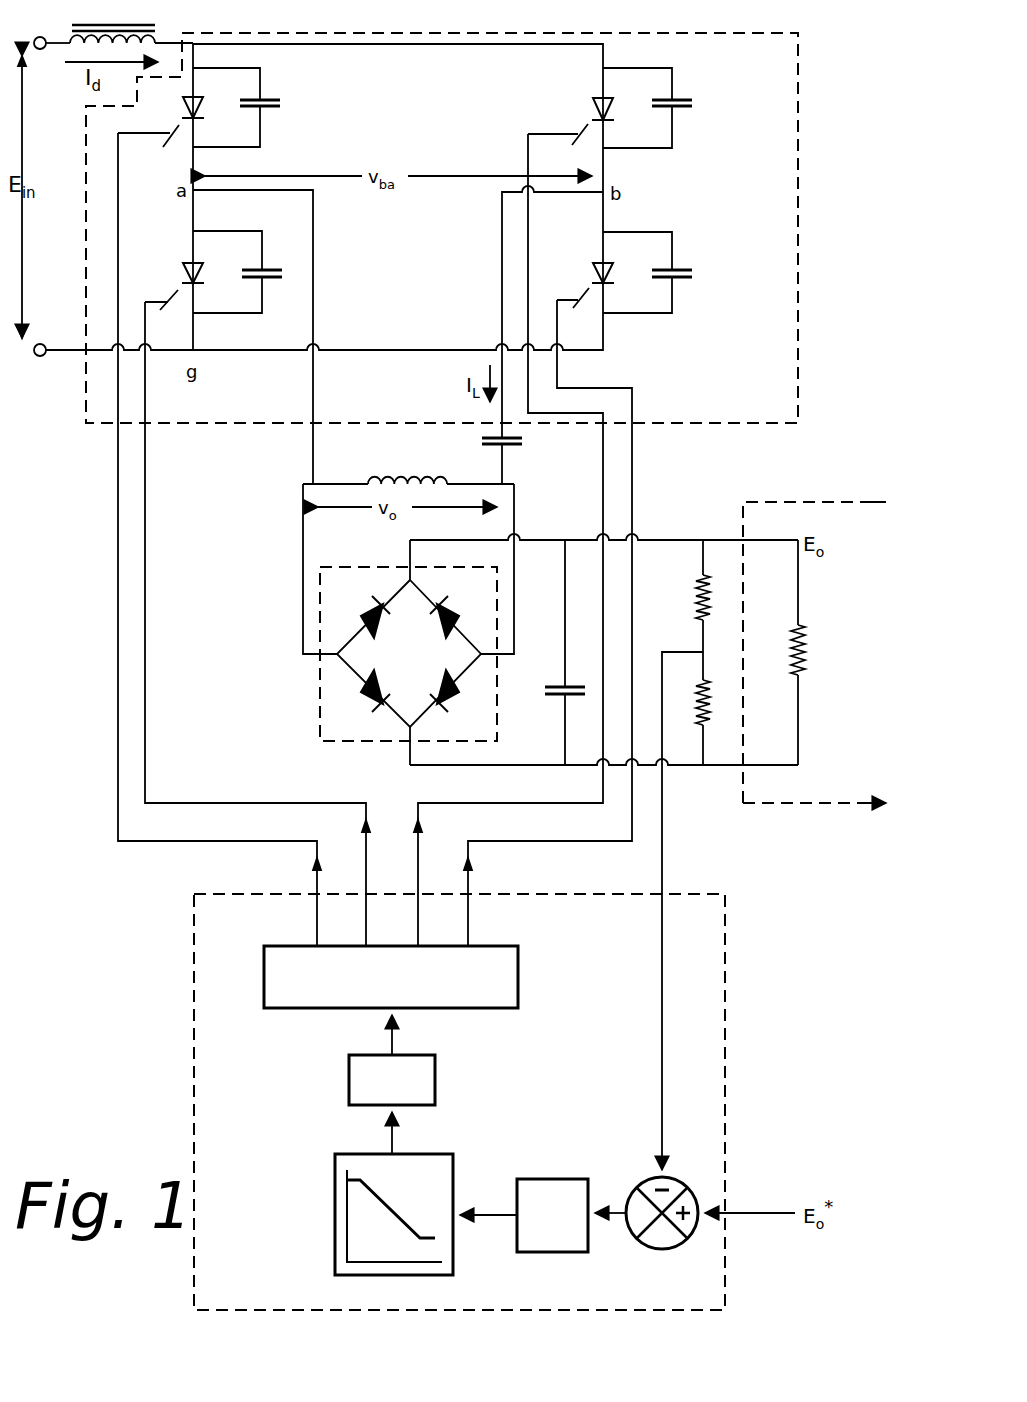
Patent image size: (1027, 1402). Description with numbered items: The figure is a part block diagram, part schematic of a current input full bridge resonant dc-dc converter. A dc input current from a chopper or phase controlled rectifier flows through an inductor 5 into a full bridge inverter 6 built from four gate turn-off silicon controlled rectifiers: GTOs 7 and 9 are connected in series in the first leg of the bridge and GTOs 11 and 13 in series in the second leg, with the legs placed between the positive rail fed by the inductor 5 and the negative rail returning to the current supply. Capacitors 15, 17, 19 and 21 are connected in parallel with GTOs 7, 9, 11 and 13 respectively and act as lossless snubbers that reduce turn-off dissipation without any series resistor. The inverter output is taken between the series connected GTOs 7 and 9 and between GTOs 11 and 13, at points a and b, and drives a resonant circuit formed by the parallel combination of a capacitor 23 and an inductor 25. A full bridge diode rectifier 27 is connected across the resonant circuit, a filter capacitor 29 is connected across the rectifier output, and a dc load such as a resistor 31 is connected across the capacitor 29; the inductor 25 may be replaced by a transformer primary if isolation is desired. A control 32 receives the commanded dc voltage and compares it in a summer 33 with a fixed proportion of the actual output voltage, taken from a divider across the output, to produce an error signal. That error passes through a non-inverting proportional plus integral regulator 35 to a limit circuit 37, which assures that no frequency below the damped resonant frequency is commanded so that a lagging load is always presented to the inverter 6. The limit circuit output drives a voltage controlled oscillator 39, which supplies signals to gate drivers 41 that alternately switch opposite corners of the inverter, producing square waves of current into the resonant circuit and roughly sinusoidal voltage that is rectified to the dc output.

The inductor 5 is at (155, 27).
The full bridge inverter 6 is at (797, 202).
The gate turn-off silicon controlled rectifier 7 is at (186, 116).
The gate turn-off silicon controlled rectifier 9 is at (186, 283).
The gate turn-off silicon controlled rectifier 11 is at (592, 115).
The gate turn-off silicon controlled rectifier 13 is at (593, 282).
The capacitor 15 is at (266, 99).
The capacitor 17 is at (268, 268).
The capacitor 19 is at (678, 99).
The capacitor 21 is at (678, 268).
The capacitor 23 is at (506, 446).
The inductor 25 is at (402, 474).
The full bridge diode rectifier 27 is at (362, 574).
The filter capacitor 29 is at (560, 697).
The resistor 31 is at (804, 650).
The control 32 is at (199, 1310).
The summer 33 is at (647, 1180).
The proportional plus integral regulator 35 is at (697, 600).
The limit circuit 37 is at (706, 708).
The voltage controlled oscillator 39 is at (348, 1080).
The gate drivers 41 is at (268, 975).